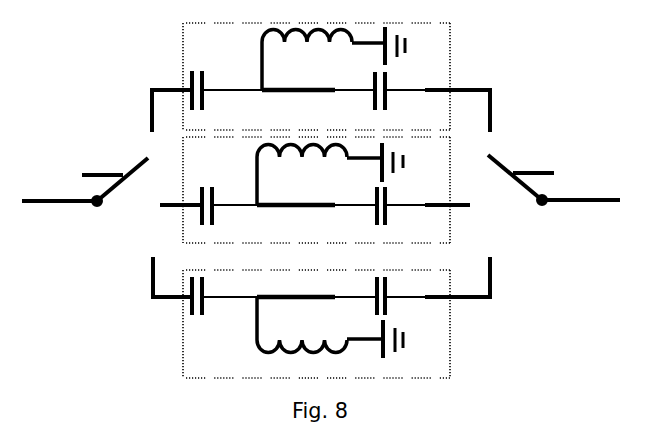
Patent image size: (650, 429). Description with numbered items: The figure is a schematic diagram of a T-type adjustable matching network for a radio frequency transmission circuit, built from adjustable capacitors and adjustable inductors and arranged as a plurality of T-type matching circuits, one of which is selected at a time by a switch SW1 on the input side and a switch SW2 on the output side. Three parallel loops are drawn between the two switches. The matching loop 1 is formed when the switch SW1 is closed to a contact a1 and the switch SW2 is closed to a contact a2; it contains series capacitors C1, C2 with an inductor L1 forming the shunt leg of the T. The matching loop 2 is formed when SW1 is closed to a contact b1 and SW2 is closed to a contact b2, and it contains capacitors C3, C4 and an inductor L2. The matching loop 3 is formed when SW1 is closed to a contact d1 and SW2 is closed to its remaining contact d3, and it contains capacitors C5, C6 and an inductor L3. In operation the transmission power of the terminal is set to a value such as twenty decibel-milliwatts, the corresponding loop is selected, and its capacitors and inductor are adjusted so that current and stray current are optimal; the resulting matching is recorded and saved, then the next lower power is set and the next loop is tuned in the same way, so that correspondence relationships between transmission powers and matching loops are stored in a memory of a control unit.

The matching loop 1 is at (316, 76).
The matching loop 2 is at (316, 190).
The matching loop 3 is at (316, 324).
The switch SW1 is at (85, 205).
The switch SW2 is at (554, 192).
The contact a1 is at (160, 117).
The contact a2 is at (477, 117).
The contact b1 is at (179, 196).
The contact b2 is at (465, 215).
The contact d1 is at (162, 274).
The second terminal of third filter unit d3 is at (472, 273).
The capacitor C1 is at (213, 92).
The capacitor C2 is at (393, 93).
The capacitor C3 is at (220, 208).
The capacitor C4 is at (395, 208).
The capacitor C5 is at (212, 298).
The capacitor C6 is at (395, 298).
The inductor L1 is at (333, 58).
The inductor L2 is at (330, 174).
The inductor L3 is at (330, 327).